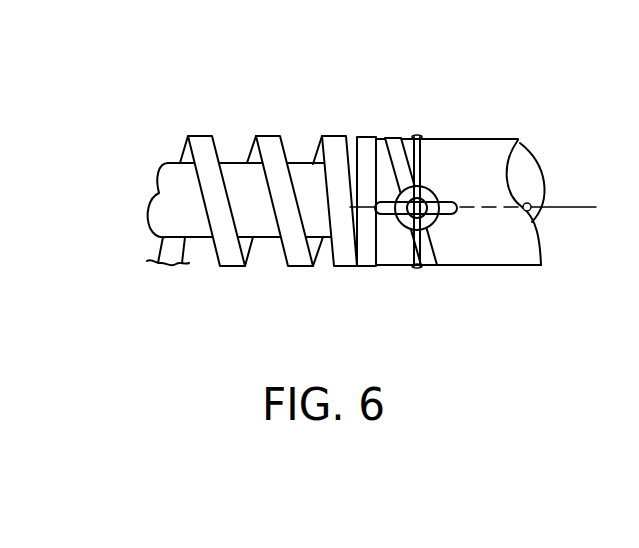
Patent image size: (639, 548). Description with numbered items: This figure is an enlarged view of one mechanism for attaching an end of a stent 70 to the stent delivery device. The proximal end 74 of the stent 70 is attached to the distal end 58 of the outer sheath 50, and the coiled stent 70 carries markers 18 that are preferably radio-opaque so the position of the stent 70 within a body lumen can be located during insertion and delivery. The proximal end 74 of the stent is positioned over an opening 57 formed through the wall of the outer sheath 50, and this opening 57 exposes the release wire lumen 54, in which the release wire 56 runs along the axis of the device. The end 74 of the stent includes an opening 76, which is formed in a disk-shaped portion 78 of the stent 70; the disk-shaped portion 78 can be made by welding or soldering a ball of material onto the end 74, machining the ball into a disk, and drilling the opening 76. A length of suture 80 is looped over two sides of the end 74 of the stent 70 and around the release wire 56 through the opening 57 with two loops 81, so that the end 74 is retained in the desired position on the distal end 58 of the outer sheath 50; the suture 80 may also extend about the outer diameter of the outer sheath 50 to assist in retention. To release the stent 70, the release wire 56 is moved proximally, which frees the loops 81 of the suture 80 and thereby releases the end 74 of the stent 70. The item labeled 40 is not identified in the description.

The markers 18 is at (367, 137).
The helical coil 40 is at (240, 163).
The outer sheath 50 is at (398, 266).
The release wire lumen 54 is at (528, 203).
The release wire 56 is at (575, 207).
The opening 57 is at (457, 204).
The distal end of the outer sheath 58 is at (335, 245).
The stent 70 is at (295, 268).
The proximal end of the stent 74 is at (436, 190).
The opening 76 is at (429, 228).
The disk-shaped portion 78 is at (423, 230).
The suture 80 is at (418, 267).
The loops 81 is at (395, 215).